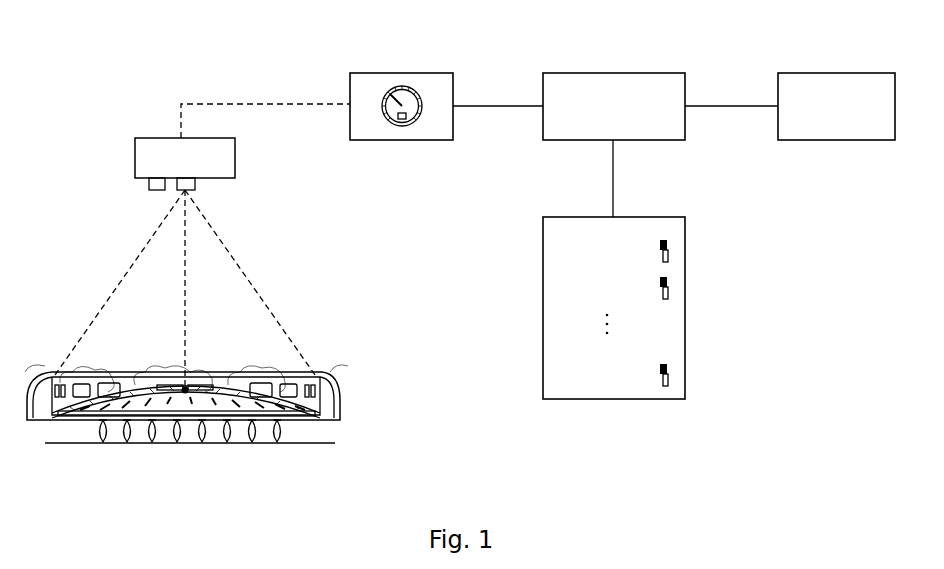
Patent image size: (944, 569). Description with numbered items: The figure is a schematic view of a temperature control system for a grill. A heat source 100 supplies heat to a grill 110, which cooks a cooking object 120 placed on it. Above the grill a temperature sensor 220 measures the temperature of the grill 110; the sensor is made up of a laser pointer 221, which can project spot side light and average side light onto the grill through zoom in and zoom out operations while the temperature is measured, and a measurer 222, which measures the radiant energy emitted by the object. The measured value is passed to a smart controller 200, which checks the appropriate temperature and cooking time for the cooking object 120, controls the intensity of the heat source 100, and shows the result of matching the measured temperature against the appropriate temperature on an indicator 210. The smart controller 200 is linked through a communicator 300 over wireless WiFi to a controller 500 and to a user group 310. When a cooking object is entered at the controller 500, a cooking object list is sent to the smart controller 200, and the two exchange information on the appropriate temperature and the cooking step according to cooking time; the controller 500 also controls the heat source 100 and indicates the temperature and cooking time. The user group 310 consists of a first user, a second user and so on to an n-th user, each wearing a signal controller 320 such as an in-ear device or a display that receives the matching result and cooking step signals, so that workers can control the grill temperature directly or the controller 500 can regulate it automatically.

The heat source 100 is at (282, 434).
The grill 110 is at (211, 370).
The cooking object 120 is at (252, 372).
The smart controller 200 is at (398, 86).
The indicator 210 is at (403, 126).
The temperature sensor 220 is at (186, 180).
The laser pointer 221 is at (196, 184).
The measurer 222 is at (150, 190).
The communicator 300 is at (612, 73).
The user group 310 is at (643, 308).
The signal controller 320 is at (668, 250).
The controller 500 is at (834, 73).